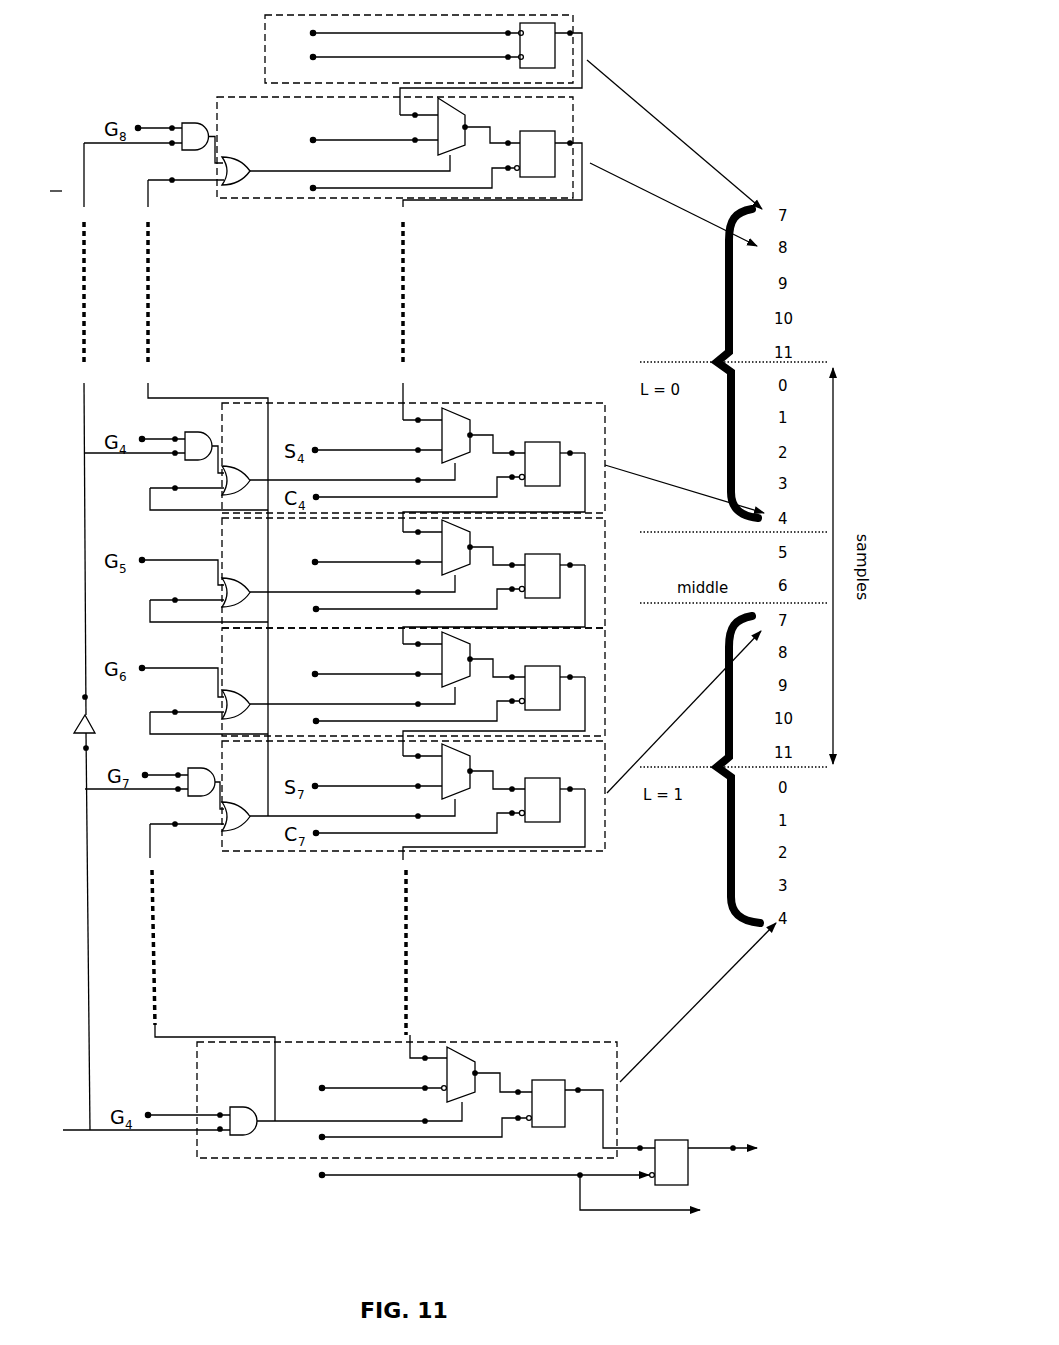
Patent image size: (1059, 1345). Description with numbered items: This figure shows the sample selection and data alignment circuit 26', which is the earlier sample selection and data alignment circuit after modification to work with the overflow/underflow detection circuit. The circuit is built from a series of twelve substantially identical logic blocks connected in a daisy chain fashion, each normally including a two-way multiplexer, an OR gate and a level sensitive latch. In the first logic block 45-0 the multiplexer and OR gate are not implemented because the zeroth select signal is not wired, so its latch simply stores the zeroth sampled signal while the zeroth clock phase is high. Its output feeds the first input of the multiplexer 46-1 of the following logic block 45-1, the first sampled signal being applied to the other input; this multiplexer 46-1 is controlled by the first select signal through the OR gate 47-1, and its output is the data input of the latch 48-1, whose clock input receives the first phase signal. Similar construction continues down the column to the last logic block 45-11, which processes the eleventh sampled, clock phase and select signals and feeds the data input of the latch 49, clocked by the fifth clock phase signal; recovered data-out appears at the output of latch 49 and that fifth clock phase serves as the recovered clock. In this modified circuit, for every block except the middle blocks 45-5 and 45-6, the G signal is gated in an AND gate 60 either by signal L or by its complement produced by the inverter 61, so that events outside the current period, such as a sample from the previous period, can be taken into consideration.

The sample selection and data alignment circuit 26' is at (422, 572).
The first logic block 45-0 is at (573, 22).
The logic block 45-1 is at (573, 122).
The two-way multiplexer 46-1 is at (465, 117).
The OR gate 47-1 is at (242, 148).
The level sensitive latch 48-1 is at (541, 131).
The AND gate 60 is at (190, 124).
The inverter 61 is at (75, 723).
The logic block 45-5 is at (607, 568).
The logic block 45-6 is at (607, 673).
The last logic block 45-11 is at (638, 1031).
The latch 49 is at (671, 1138).